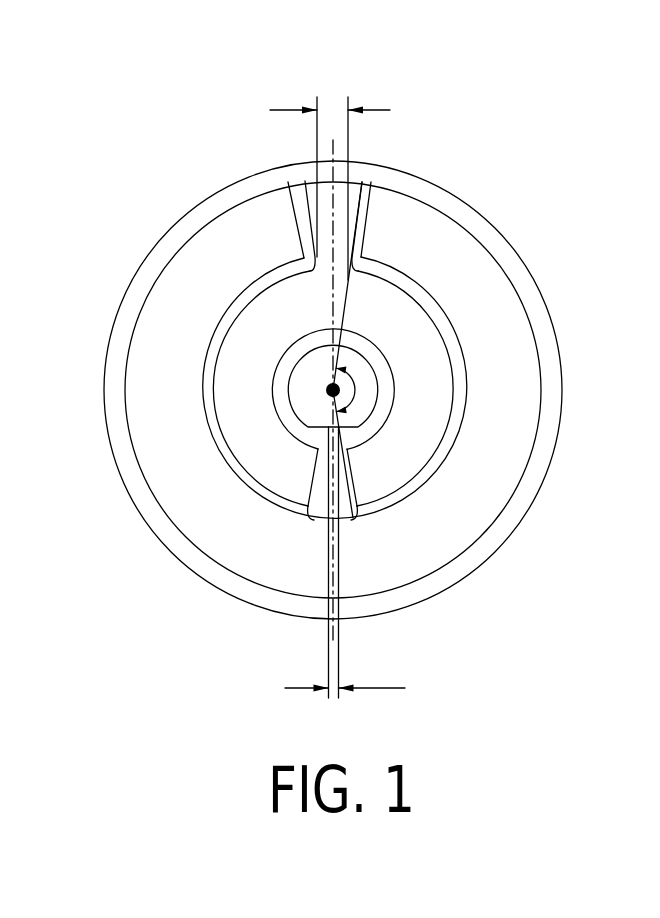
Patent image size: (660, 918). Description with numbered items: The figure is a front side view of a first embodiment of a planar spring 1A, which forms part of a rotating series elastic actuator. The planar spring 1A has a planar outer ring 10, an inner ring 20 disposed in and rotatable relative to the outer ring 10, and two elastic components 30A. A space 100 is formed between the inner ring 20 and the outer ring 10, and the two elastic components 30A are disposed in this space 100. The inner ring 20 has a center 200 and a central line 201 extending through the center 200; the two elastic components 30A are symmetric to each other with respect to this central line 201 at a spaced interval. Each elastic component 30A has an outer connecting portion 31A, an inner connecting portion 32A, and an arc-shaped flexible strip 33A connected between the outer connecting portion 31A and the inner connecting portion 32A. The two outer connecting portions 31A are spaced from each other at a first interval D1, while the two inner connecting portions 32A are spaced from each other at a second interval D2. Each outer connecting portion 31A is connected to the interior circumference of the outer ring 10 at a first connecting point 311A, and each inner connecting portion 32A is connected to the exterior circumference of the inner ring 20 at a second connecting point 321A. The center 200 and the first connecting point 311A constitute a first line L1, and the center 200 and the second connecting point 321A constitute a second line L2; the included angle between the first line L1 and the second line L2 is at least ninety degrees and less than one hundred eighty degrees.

The planar spring 1A is at (188, 187).
The outer ring 10 is at (502, 247).
The inner ring 20 is at (385, 373).
The elastic component 30A is at (205, 312).
The outer connecting portion 31A is at (366, 221).
The inner connecting portion 32A is at (355, 478).
The flexible strip 33A is at (453, 445).
The space 100 is at (185, 404).
The center 200 is at (333, 392).
The central line 201 is at (333, 148).
The first connecting point 311A is at (371, 182).
The second connecting point 321A is at (345, 458).
The first interval D1 is at (330, 169).
The second interval D2 is at (345, 670).
The first line L1 is at (350, 300).
The second line L2 is at (346, 462).